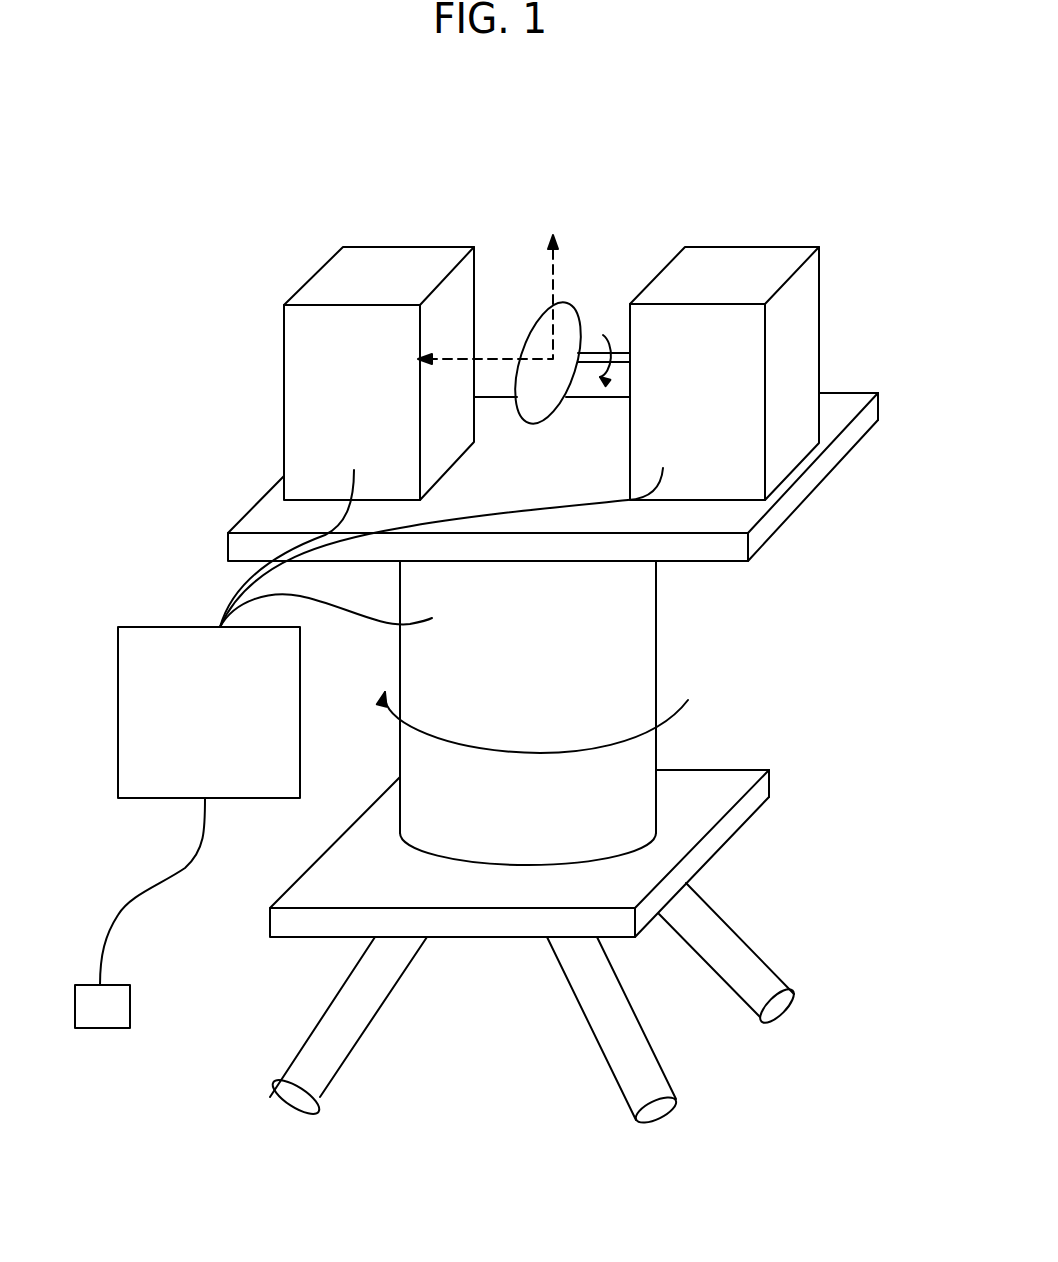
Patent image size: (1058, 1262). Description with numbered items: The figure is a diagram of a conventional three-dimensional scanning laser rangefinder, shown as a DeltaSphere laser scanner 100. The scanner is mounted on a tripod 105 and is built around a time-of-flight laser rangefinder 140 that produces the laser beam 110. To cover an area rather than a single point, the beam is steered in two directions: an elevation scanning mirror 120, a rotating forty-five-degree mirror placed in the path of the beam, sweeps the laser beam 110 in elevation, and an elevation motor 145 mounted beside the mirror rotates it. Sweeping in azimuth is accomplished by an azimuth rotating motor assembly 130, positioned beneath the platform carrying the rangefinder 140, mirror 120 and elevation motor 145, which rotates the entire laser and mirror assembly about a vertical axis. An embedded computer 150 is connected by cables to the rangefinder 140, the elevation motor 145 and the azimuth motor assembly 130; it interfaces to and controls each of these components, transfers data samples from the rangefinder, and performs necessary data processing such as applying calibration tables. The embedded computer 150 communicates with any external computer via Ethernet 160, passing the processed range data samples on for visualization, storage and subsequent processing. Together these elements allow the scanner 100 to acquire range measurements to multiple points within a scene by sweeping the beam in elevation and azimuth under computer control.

The laser scanning 3D rangefinder 100 is at (479, 439).
The tripod 105 is at (724, 880).
The laser beam 110 is at (560, 255).
The elevation scanning mirror 120 is at (537, 302).
The azimuth rotating motor assembly 130 is at (675, 648).
The laser rangefinder 140 is at (297, 293).
The elevation motor 145 is at (819, 272).
The embedded computer 150 is at (160, 627).
The Ethernet 160 is at (153, 943).